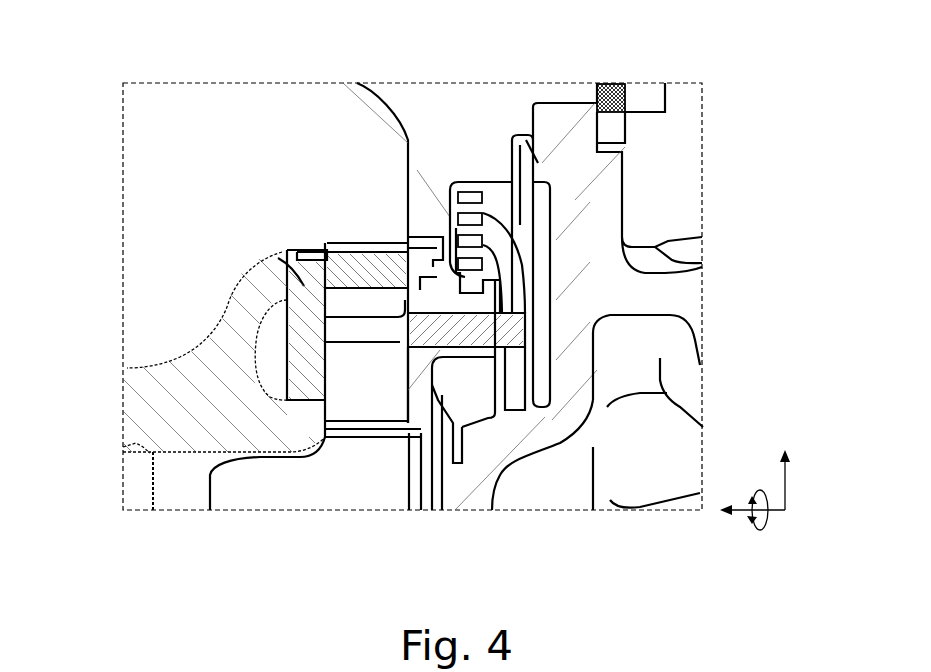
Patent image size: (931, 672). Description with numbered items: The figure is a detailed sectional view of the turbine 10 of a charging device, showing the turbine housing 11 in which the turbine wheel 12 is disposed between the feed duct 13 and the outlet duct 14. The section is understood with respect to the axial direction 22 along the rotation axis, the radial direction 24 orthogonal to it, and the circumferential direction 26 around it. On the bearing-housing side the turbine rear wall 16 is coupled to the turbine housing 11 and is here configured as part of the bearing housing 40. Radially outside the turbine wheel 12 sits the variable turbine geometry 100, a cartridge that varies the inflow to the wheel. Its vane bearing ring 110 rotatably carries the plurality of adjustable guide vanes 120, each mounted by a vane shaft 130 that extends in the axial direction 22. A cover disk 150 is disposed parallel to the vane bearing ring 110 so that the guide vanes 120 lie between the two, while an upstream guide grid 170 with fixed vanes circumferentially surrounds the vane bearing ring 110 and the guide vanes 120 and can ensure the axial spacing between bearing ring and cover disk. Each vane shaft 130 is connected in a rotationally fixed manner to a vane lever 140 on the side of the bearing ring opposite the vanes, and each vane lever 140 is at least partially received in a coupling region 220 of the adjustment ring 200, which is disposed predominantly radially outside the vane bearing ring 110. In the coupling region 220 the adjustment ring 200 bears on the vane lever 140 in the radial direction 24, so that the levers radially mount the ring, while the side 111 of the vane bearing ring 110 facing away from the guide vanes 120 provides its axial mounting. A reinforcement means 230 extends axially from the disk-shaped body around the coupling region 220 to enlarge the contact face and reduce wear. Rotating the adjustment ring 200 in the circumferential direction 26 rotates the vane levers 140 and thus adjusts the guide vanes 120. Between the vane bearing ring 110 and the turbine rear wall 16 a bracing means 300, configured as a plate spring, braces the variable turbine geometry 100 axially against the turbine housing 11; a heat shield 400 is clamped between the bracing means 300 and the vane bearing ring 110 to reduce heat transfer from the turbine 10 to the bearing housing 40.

The turbine 10 is at (742, 108).
The turbine housing 11 is at (460, 137).
The turbine wheel 12 is at (238, 483).
The feed duct 13 is at (229, 140).
The outlet duct 14 is at (143, 450).
The turbine rear wall 16 is at (482, 470).
The axial direction 22 is at (746, 527).
The radial direction 24 is at (785, 465).
The circumferential direction 26 is at (753, 496).
The bearing housing 40 is at (670, 303).
The variable turbine geometry 100 is at (378, 190).
The vane bearing ring 110 is at (443, 287).
The side of the vane bearing ring facing away from the guide vanes 111 is at (405, 305).
The adjustable guide vane 120 is at (368, 412).
The vane shaft 130 is at (533, 315).
The vane lever 140 is at (525, 250).
The cover disk 150 is at (285, 247).
The upstream guide grid 170 is at (311, 253).
The adjustment ring 200 is at (485, 197).
The coupling region 220 is at (490, 228).
The reinforcement means 230 is at (512, 183).
The bracing means 300 is at (472, 427).
The heat shield 400 is at (447, 465).